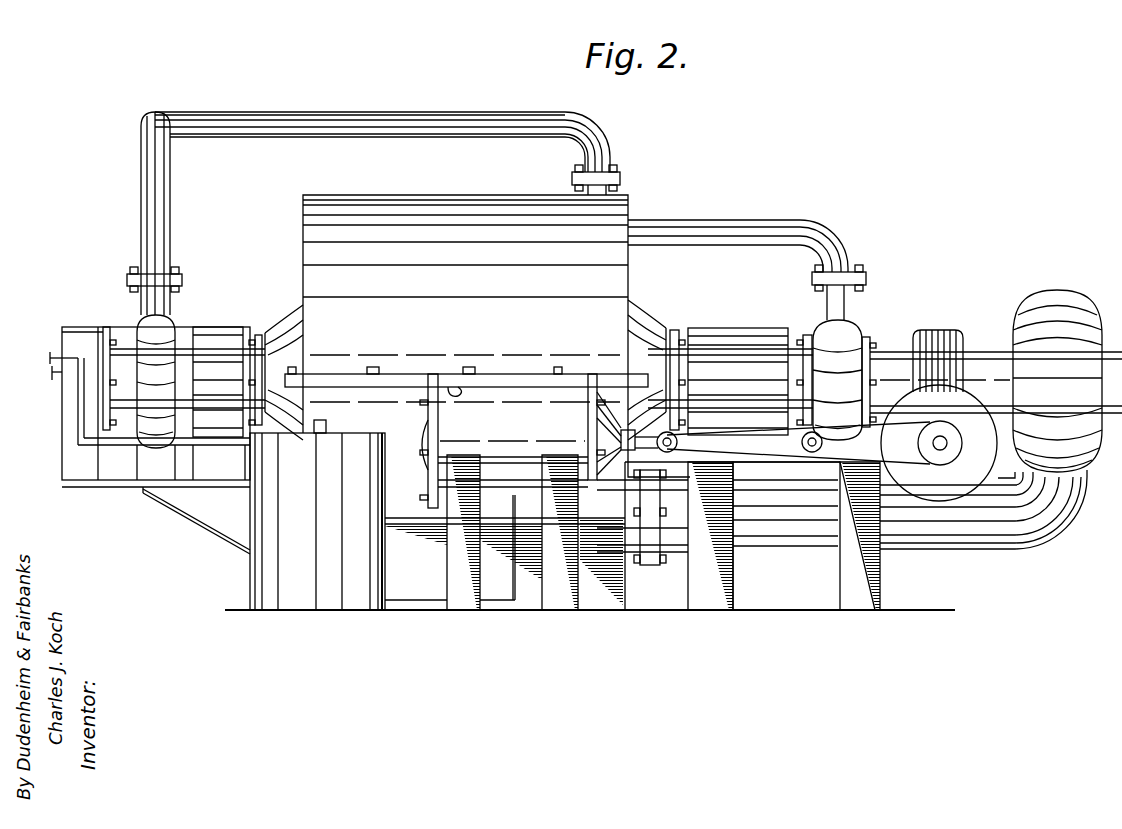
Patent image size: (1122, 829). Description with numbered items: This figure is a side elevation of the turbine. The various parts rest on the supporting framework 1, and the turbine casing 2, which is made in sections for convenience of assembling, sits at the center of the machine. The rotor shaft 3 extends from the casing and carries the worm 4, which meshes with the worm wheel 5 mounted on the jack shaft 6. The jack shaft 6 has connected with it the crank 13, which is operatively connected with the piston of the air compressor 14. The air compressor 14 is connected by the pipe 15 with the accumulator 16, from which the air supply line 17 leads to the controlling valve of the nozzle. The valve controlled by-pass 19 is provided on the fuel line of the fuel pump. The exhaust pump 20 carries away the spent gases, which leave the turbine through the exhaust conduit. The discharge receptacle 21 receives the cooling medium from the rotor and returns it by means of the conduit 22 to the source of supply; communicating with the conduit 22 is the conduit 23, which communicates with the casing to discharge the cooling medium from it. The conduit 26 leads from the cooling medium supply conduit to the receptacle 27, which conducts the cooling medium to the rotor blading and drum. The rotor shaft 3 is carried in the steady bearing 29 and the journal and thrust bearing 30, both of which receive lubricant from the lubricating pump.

The supporting framework 1 is at (550, 606).
The turbine casing 2 is at (477, 351).
The rotor shaft 3 is at (983, 377).
The worm 4 is at (948, 330).
The worm wheel 5 is at (939, 443).
The jack shaft 6 is at (948, 443).
The crank 13 is at (798, 443).
The air compressor 14 is at (536, 439).
The pipe 15 is at (418, 600).
The accumulator 16 is at (317, 515).
The air supply line 17 is at (203, 446).
The valve controlled by-pass 19 is at (957, 553).
The exhaust pump 20 is at (1057, 381).
The discharge receptacle 21 is at (156, 381).
The conduit 22 is at (140, 138).
The conduit 23 is at (358, 124).
The conduit 26 is at (742, 233).
The receptacle 27 is at (843, 352).
The steady bearing 29 is at (218, 345).
The journal and thrust bearing 30 is at (727, 353).